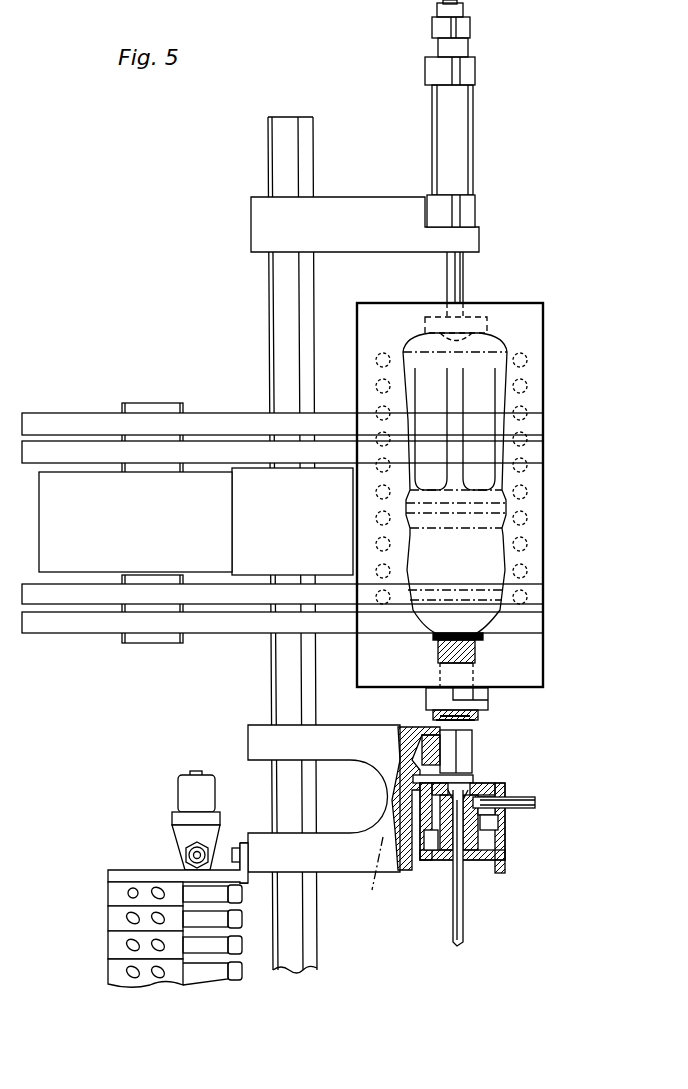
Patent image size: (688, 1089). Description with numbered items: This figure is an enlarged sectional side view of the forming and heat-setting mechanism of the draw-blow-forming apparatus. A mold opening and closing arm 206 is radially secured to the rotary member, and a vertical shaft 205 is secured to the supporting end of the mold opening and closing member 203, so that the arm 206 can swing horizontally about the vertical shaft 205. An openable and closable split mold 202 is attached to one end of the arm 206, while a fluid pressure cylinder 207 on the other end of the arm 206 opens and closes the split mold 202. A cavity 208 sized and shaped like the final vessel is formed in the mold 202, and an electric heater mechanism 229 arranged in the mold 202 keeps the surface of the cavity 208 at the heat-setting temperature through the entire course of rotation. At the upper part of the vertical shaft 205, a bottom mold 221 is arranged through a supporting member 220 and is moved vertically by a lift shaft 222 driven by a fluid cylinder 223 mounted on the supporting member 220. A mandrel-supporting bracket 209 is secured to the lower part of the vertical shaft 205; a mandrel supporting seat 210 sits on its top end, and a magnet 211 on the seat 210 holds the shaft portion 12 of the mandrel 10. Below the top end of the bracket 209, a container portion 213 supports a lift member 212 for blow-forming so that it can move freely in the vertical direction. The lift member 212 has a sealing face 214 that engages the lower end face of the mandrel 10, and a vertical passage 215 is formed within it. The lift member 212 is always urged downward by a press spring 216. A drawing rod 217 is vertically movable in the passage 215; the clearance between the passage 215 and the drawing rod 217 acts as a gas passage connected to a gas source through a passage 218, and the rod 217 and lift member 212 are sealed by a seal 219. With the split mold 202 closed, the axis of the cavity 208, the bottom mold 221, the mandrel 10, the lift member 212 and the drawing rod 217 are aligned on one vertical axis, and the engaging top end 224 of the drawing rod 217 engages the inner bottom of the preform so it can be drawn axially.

The mold opening and closing member 203 is at (70, 399).
The vertical shaft 205 is at (268, 311).
The mold opening and closing arm 206 is at (212, 418).
The fluid pressure cylinder 207 is at (170, 524).
The cavity 208 is at (503, 357).
The split mold 202 is at (543, 396).
The electric heater mechanism 229 is at (530, 493).
The supporting member 220 is at (345, 203).
The fluid cylinder 223 is at (476, 128).
The lift shaft 222 is at (447, 272).
The bottom mold 221 is at (473, 320).
The mandrel 10 is at (488, 692).
The mandrel-supporting bracket 209 is at (366, 742).
The engaging top end 224 is at (403, 790).
The magnet 211 is at (470, 752).
The shaft portion 12 is at (473, 752).
The mandrel supporting seat 210 is at (470, 766).
The sealing face 214 is at (473, 790).
The passage 215 is at (510, 788).
The passage 218 is at (510, 812).
The container portion 213 is at (503, 825).
The lift member 212 is at (505, 845).
The drawing rod 217 is at (465, 892).
The press spring 216 is at (375, 865).
The seal 219 is at (430, 862).